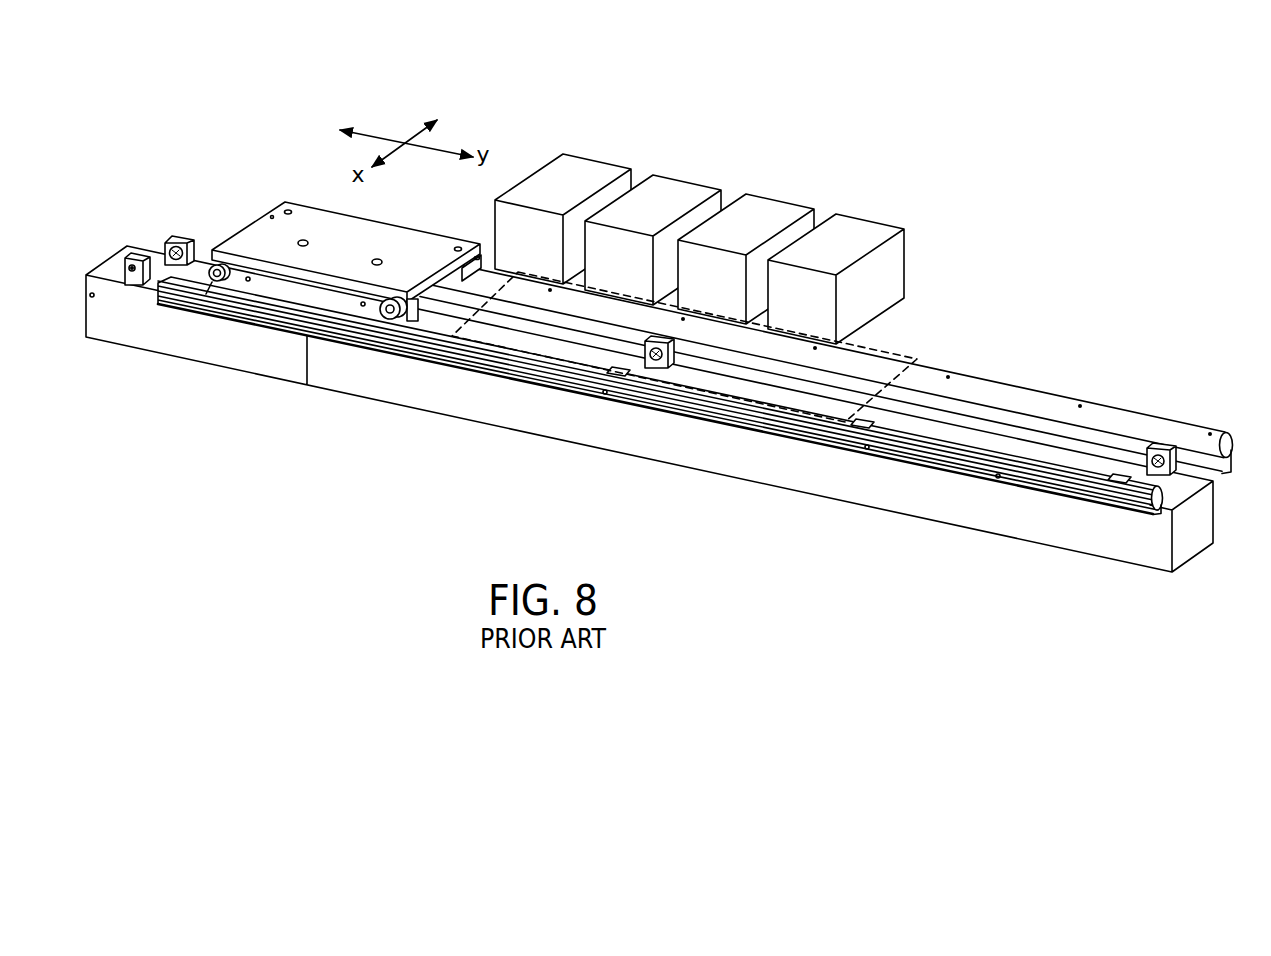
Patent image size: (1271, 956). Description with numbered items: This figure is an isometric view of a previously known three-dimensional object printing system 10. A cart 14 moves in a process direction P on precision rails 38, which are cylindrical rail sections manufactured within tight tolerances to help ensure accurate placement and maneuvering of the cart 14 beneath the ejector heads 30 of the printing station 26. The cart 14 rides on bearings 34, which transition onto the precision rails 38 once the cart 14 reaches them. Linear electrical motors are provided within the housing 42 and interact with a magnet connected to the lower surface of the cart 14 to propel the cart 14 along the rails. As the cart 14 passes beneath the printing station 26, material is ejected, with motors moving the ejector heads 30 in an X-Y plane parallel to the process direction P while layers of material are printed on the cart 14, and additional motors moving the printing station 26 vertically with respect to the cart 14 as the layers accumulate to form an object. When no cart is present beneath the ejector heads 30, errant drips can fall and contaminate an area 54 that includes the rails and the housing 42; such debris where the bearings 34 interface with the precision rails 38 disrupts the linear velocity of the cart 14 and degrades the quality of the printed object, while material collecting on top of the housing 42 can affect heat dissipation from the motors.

The three-dimensional object printing system 10 is at (884, 121).
The cart 14 is at (388, 230).
The printing station 26 is at (917, 172).
The ejector heads 30 is at (660, 173).
The bearings 34 is at (390, 319).
The precision rails 38 is at (1035, 407).
The housing 42 is at (938, 503).
The area 54 is at (917, 359).
The process direction P is at (556, 295).